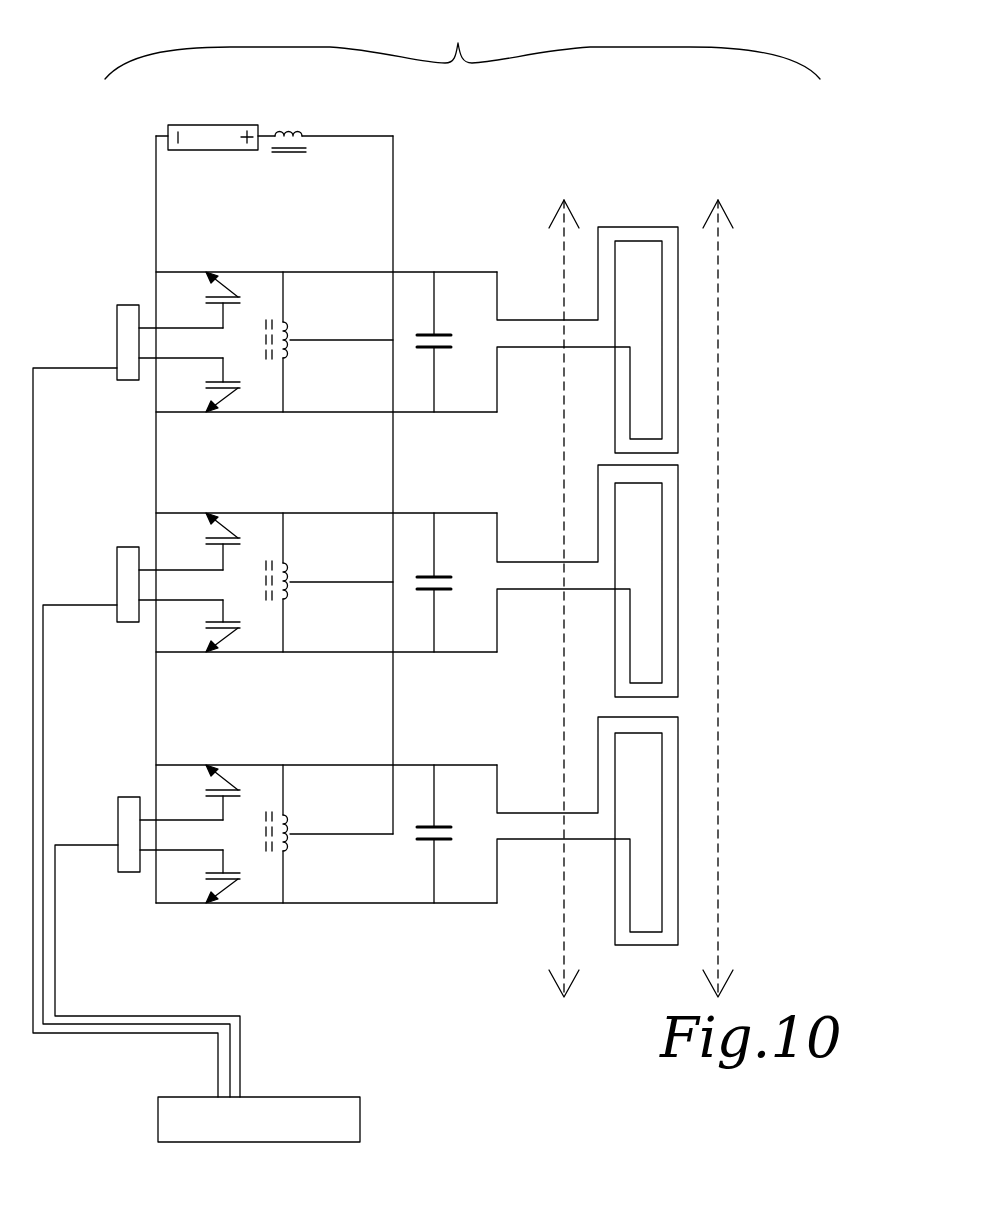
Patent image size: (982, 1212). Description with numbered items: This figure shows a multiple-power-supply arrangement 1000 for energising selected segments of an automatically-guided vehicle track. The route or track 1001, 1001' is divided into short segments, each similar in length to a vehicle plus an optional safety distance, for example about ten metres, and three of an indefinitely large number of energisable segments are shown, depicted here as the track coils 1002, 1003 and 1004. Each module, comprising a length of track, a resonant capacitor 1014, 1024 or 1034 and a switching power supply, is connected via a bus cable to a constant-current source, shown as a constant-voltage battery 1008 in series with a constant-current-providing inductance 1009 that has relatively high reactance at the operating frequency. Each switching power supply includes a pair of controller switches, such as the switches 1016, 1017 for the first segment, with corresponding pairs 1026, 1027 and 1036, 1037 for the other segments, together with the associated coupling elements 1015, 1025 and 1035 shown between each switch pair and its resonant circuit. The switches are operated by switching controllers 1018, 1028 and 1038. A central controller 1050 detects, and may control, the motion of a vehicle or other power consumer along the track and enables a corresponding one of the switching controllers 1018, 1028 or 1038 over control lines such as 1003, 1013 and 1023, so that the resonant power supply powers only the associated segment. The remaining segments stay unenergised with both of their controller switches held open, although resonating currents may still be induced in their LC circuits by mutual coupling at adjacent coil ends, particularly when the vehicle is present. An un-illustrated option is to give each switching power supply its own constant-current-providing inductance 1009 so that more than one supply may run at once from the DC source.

The transmitter circuit 1000 is at (462, 44).
The track 1001 is at (565, 559).
The track 1001' is at (736, 559).
The energisable segment 1002 is at (678, 335).
The energisable segment 1003 is at (678, 592).
The third coil 1004 is at (678, 848).
The constant-voltage battery 1008 is at (168, 127).
The constant-current-providing inductance 1009 is at (302, 128).
The control line 1013 is at (122, 718).
The capacitor 1014 is at (450, 350).
The inductor 1015 is at (352, 380).
The controller switch 1016 is at (245, 405).
The controller switch 1017 is at (240, 292).
The switching controller 1018 is at (117, 346).
The control line 1023 is at (125, 962).
The capacitor 1024 is at (450, 592).
The inductor 1025 is at (352, 627).
The transistor 1026 is at (255, 648).
The transistor 1027 is at (240, 535).
The switching controller 1028 is at (115, 575).
The capacitor 1034 is at (450, 842).
The inductor 1035 is at (368, 873).
The transistor 1036 is at (245, 893).
The transistor 1037 is at (240, 790).
The switching controller 1038 is at (118, 822).
The central controller 1050 is at (380, 1068).